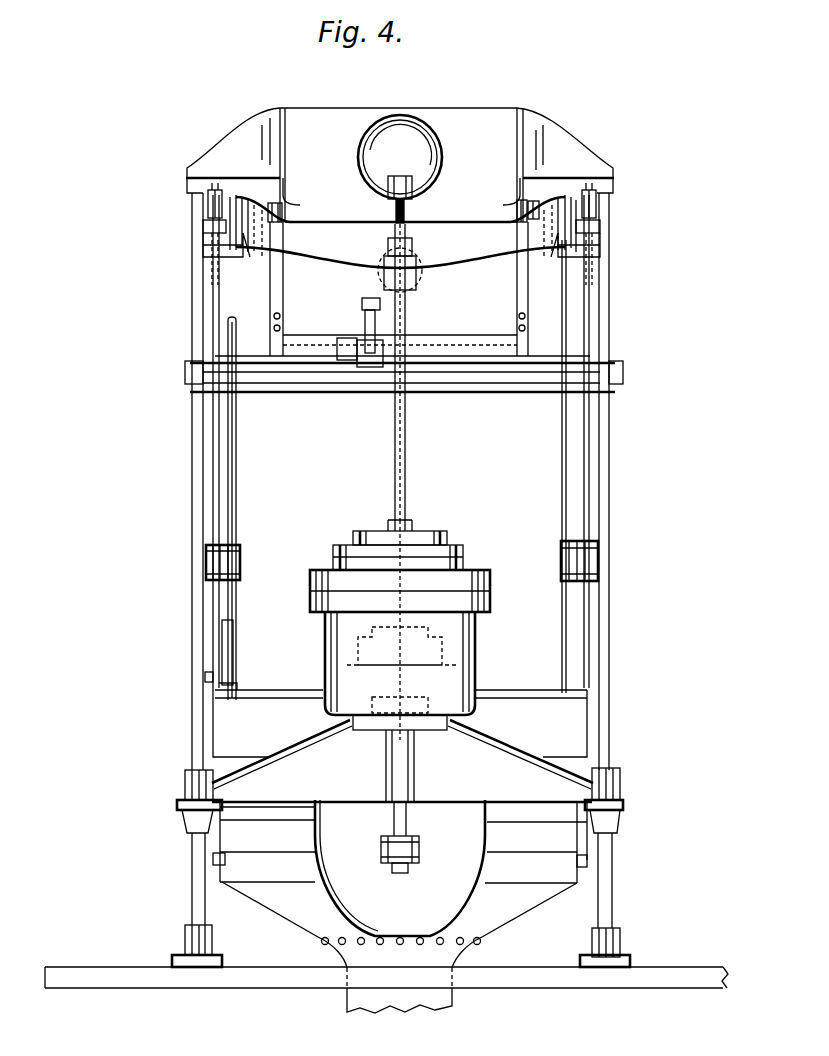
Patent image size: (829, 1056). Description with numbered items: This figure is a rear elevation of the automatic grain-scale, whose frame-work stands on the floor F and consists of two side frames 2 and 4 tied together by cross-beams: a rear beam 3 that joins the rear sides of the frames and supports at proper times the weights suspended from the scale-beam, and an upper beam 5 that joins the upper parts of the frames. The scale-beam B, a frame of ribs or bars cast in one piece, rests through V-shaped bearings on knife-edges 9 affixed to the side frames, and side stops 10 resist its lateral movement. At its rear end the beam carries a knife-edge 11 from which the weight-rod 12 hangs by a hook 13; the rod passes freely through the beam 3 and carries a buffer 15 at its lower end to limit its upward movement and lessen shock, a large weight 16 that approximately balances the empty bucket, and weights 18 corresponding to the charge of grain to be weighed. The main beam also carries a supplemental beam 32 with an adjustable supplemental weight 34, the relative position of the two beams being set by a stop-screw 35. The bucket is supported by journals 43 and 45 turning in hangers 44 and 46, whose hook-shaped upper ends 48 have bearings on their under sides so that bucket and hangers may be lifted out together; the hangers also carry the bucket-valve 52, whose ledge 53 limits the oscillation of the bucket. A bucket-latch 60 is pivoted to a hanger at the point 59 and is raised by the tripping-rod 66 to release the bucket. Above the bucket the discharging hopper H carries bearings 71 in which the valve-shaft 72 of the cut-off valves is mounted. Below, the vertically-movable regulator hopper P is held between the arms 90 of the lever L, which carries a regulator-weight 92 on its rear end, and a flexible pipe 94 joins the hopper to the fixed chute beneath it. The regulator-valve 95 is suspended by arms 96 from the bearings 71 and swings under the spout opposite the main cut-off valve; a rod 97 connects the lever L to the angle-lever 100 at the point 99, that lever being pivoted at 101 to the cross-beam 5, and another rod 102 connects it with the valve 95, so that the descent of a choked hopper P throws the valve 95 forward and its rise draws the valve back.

The side frame 2 is at (200, 448).
The beam 3 is at (492, 756).
The side frame 4 is at (603, 475).
The beam 5 is at (293, 384).
The knife-edges 9 is at (228, 250).
The side stops 10 is at (212, 225).
The knife-edge 11 is at (408, 244).
The weight-rod 12 is at (406, 504).
The hook 13 is at (393, 221).
The buffer 15 is at (423, 853).
The large weight 16 is at (464, 668).
The weights 18 is at (480, 570).
The supplemental beam 32 is at (412, 178).
The supplemental weight 34 is at (400, 157).
The stop-screw 35 is at (404, 208).
The journal 43 is at (237, 559).
The hanger 44 is at (216, 435).
The journal 45 is at (564, 545).
The hanger 46 is at (586, 450).
The hook-shaped upper end 48 is at (210, 192).
The bucket-valve 52 is at (223, 715).
The ledge 53 is at (276, 695).
The pivot point 59 is at (208, 675).
The bucket-latch 60 is at (226, 658).
The tripping-rod 66 is at (233, 457).
The bearings 71 is at (283, 218).
The valve-shaft 72 is at (537, 207).
The arms 90 is at (226, 860).
The regulator-weight 92 is at (341, 888).
The pipe 94 is at (448, 955).
The regulator-valve 95 is at (484, 348).
The arms 96 is at (273, 299).
The rod 97 is at (384, 440).
The connection point 99 is at (396, 355).
The angle-lever 100 is at (368, 332).
The pivot 101 is at (345, 347).
The rod 102 is at (380, 326).
The discharging hopper H is at (318, 118).
The scale-beam B is at (495, 237).
The lever L is at (497, 837).
The hopper P is at (513, 898).
The floor F is at (638, 982).